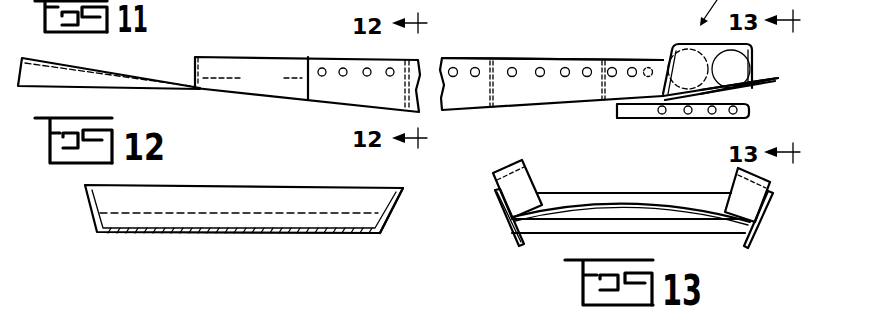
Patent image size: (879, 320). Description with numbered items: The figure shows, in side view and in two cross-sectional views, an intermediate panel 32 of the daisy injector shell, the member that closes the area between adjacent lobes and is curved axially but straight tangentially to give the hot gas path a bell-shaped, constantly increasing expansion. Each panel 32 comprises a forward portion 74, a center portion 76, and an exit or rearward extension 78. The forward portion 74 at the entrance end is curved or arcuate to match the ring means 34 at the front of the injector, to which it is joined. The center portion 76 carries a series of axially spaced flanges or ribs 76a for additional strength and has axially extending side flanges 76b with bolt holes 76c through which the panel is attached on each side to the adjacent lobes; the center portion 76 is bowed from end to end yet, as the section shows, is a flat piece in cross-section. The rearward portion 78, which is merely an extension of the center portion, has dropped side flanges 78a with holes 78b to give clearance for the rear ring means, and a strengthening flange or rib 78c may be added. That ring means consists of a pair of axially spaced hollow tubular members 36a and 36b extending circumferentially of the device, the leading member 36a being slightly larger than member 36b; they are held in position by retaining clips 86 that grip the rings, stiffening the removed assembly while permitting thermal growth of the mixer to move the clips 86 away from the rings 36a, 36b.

In FIG. 11, the panel 32 is at (316, 51).
In FIG. 11, the ring means 34 is at (228, 0).
In FIG. 11, the forward portion 74 is at (114, 73).
In FIG. 11, the center portion 76 is at (492, 116).
In FIG. 12, the center portion 76 is at (190, 240).
In FIG. 11, the flanges or ribs 76a is at (252, 77).
In FIG. 12, the flanges or ribs 76a is at (262, 187).
In FIG. 11, the side flanges 76b is at (533, 51).
In FIG. 12, the side flanges 76b is at (397, 208).
In FIG. 13, the side flanges 76b is at (500, 198).
In FIG. 11, the bolt holes 76c is at (477, 67).
In FIG. 11, the rearward extension or portion 78 is at (622, 124).
In FIG. 13, the rearward extension or portion 78 is at (561, 242).
In FIG. 11, the dropped side flanges 78a is at (650, 62).
In FIG. 13, the dropped side flanges 78a is at (512, 238).
In FIG. 11, the holes 78b is at (660, 114).
In FIG. 11, the strengthening flange or rib 78c is at (755, 72).
In FIG. 13, the strengthening flange or rib 78c is at (671, 192).
In FIG. 11, the retaining clips 86 is at (752, 46).
In FIG. 13, the retaining clips 86 is at (496, 170).
In FIG. 11, the tubular member 36a is at (668, 58).
In FIG. 11, the tubular member 36b is at (737, 63).